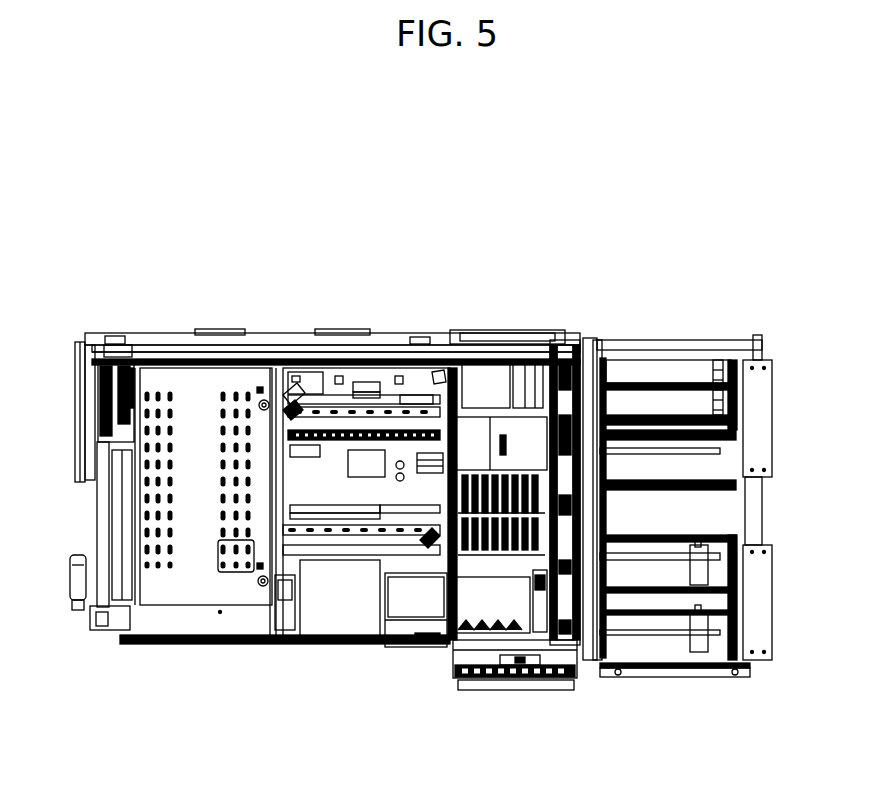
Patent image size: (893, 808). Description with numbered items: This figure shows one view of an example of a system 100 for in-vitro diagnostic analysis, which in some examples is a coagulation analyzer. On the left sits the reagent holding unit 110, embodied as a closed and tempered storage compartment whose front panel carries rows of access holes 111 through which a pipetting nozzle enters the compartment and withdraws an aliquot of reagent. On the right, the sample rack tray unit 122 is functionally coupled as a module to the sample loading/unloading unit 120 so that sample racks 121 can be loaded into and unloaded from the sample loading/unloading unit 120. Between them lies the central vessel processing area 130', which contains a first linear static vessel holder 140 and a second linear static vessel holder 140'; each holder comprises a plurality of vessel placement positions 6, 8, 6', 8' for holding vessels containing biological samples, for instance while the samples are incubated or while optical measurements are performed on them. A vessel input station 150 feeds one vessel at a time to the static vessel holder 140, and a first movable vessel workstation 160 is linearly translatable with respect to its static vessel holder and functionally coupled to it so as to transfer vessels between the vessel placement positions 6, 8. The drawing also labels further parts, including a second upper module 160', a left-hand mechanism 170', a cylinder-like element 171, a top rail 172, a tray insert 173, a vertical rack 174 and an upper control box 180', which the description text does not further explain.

The system 100 is at (619, 317).
The reagent holding unit 110 is at (217, 652).
The access holes 111 is at (151, 566).
The sample loading/unloading unit 120 is at (494, 706).
The sample racks 121 is at (727, 397).
The sample rack tray unit 122 is at (695, 683).
The central vessel processing area 130' is at (405, 655).
The first linear static vessel holder 140 is at (327, 652).
The second linear static vessel holder 140' is at (370, 450).
The vessel input station 150 is at (384, 400).
The first movable vessel workstation 160 is at (416, 663).
The upper module 160' is at (307, 352).
The left drive mechanism 170' is at (102, 441).
The cylinder 171 is at (130, 598).
The top rail 172 is at (258, 360).
The tray insert 173 is at (537, 660).
The vertical rack 174 is at (578, 598).
The control box 180' is at (507, 345).
The rails 6', 8' is at (424, 339).
The rails 6, 8 is at (365, 560).